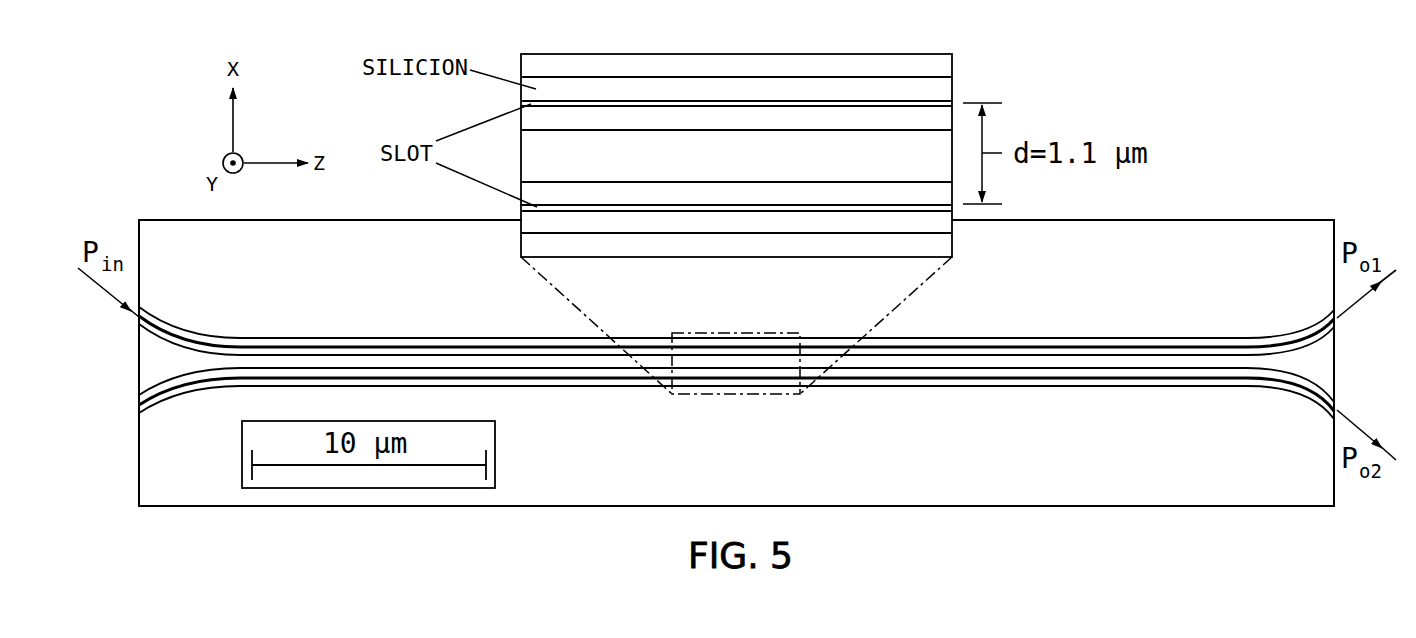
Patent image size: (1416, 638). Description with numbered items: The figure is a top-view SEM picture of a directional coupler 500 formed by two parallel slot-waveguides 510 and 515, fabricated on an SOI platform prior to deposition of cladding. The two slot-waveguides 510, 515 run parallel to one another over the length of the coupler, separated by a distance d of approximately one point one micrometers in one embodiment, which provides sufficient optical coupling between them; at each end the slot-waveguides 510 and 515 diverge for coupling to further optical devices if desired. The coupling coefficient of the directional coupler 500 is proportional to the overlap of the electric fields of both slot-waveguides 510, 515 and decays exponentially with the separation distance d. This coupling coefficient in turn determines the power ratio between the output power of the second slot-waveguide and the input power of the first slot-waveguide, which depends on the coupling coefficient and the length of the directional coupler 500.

The directional coupler 500 is at (1224, 78).
The slot-waveguide 510 is at (1292, 399).
The slot-waveguide 515 is at (1292, 333).